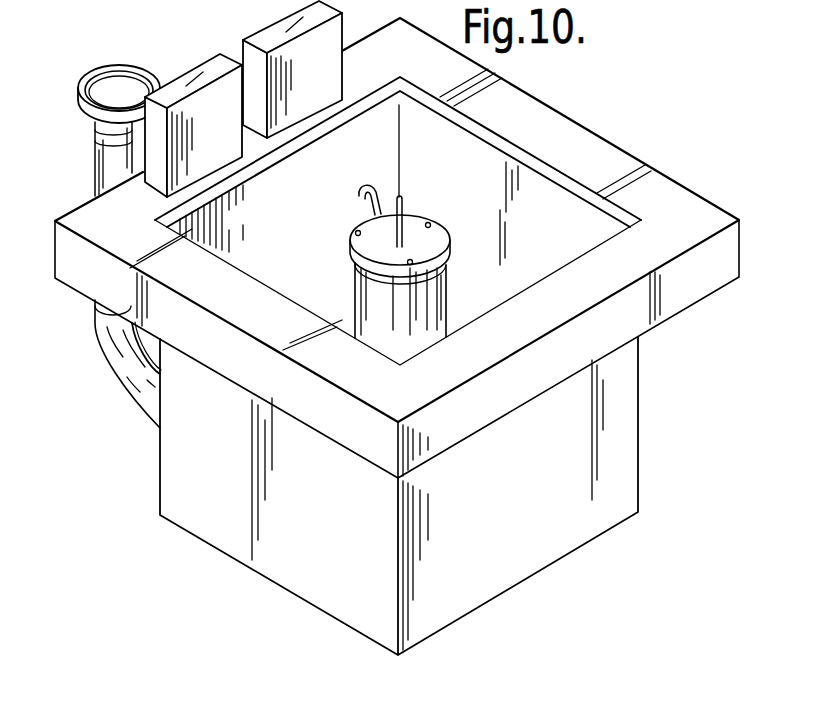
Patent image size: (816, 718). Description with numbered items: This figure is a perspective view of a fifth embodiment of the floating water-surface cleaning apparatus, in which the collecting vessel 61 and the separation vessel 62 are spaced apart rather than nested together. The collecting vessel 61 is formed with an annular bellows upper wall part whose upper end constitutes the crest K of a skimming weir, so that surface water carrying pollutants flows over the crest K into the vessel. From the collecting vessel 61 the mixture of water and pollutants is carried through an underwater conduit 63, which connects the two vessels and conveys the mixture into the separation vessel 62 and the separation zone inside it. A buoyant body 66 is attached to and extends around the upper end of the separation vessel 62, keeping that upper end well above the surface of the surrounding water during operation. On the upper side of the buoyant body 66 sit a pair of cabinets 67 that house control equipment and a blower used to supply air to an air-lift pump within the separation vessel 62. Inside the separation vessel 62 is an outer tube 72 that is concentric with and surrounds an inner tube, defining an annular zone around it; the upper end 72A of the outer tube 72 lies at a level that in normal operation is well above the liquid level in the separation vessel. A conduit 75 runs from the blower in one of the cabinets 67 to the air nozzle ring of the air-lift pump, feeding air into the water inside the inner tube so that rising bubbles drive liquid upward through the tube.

The crest K is at (90, 73).
The collecting vessel 61 is at (84, 113).
The separation vessel 62 is at (220, 549).
The underwater conduit 63 is at (130, 378).
The buoyant body 66 is at (672, 190).
The cabinets 67 is at (256, 34).
The outer tube 72 is at (433, 310).
The upper end of the outer tube 72A is at (443, 263).
The conduit 75 is at (372, 208).